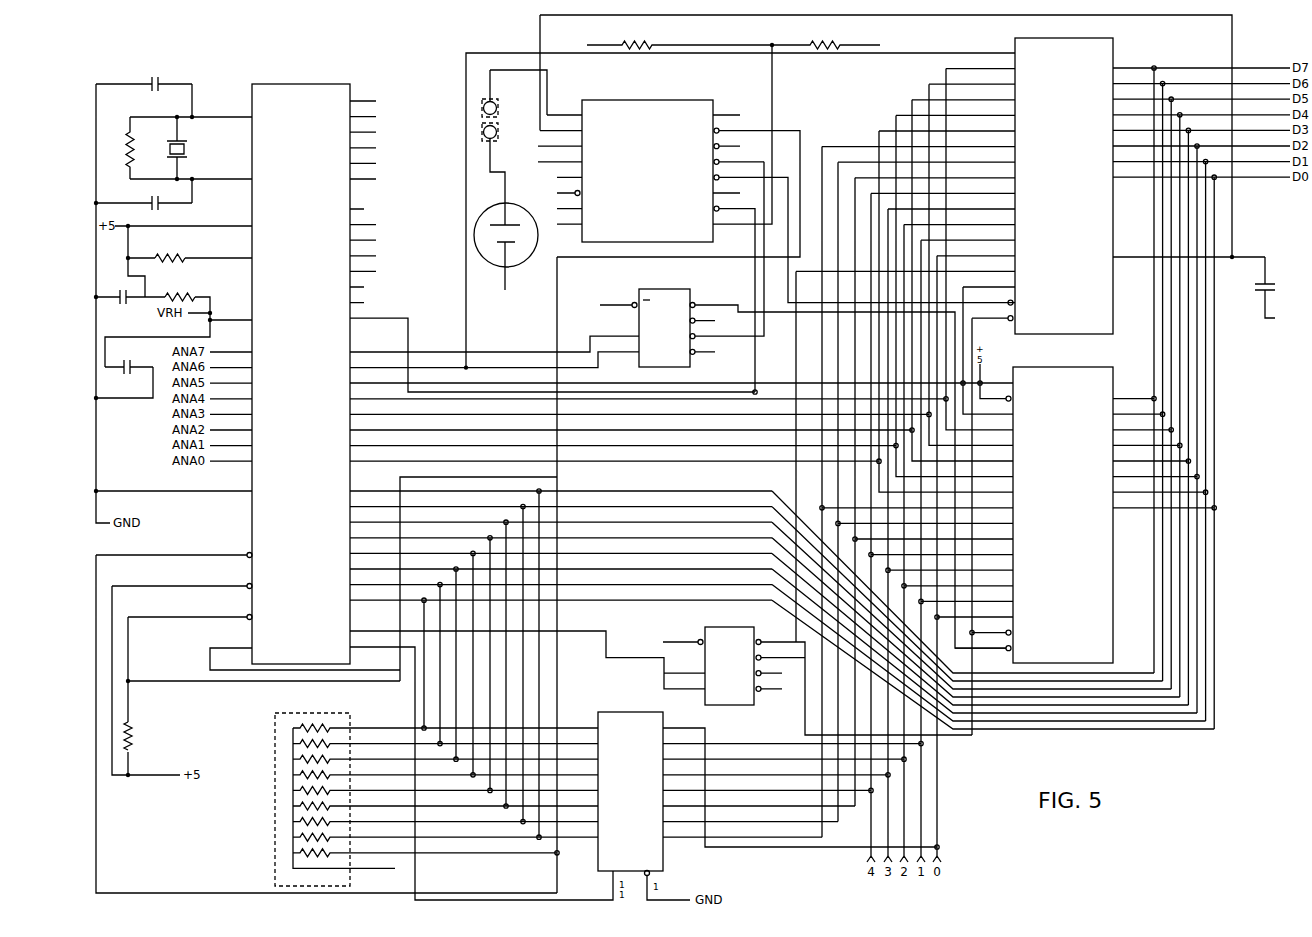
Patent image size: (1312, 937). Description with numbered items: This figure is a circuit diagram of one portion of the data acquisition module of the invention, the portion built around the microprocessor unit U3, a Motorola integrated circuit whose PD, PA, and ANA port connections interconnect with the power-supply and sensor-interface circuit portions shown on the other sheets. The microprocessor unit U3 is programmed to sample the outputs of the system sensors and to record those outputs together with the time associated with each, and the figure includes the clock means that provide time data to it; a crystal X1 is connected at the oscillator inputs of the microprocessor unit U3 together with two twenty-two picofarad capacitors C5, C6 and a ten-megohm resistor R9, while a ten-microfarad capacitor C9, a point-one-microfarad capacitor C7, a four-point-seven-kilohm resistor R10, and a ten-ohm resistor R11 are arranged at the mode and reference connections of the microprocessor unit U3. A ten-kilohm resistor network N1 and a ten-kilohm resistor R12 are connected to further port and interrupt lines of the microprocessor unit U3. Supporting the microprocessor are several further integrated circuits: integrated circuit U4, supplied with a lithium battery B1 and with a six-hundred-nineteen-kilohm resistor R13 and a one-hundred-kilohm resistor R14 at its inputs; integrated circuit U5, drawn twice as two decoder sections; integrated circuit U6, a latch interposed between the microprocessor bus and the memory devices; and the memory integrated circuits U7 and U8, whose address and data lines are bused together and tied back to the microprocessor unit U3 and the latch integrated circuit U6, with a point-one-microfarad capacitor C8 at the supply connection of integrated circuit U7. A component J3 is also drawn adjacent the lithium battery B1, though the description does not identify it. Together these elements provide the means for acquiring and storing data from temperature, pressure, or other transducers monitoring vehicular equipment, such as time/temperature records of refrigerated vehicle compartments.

The microprocessor unit U3 is at (317, 359).
The integrated circuit U4 is at (752, 454).
The integrated circuit U5 is at (789, 448).
The integrated circuit U6 is at (634, 780).
The integrated circuit U7 is at (1065, 178).
The integrated circuit U8 is at (1064, 502).
The resistor network N1 is at (346, 785).
The lithium battery B1 is at (503, 264).
The jumper J3 is at (500, 136).
The crystal X1 is at (202, 148).
The capacitor C5 is at (144, 82).
The capacitor C6 is at (144, 200).
The capacitor C7 is at (122, 296).
The capacitor C8 is at (1280, 291).
The capacitor C9 is at (129, 367).
The resistor R9 is at (143, 148).
The resistor R10 is at (167, 246).
The resistor R11 is at (180, 285).
The resistor R12 is at (143, 735).
The resistor R13 is at (667, 33).
The resistor R14 is at (841, 33).